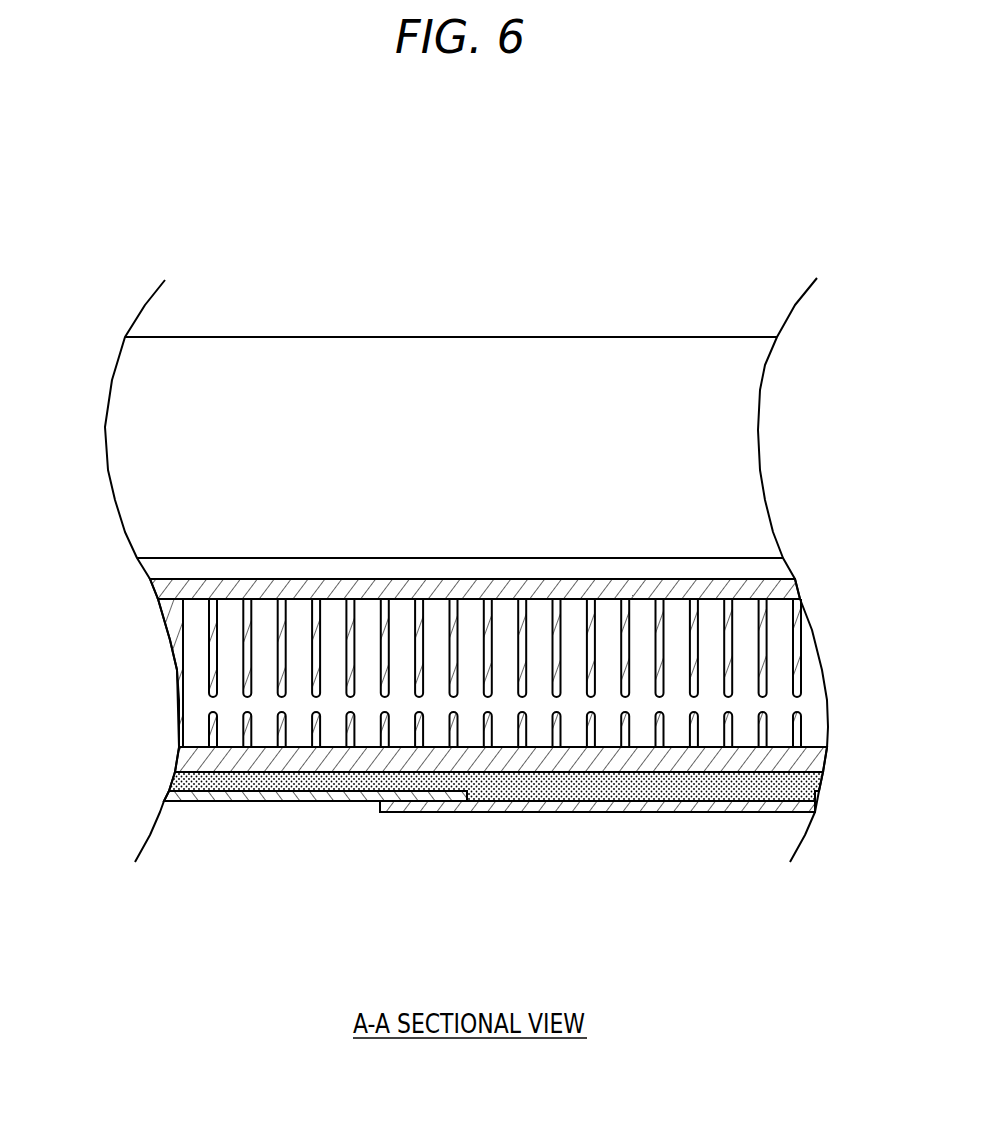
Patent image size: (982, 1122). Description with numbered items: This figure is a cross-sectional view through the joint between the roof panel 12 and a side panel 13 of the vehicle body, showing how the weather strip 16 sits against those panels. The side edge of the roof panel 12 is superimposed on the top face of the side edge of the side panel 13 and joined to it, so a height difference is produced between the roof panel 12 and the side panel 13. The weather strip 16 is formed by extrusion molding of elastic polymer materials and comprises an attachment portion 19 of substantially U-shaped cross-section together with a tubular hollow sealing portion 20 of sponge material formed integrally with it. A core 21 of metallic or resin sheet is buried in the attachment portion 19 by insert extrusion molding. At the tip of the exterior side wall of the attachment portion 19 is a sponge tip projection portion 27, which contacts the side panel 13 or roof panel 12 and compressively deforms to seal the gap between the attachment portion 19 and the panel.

The roof panel 12 is at (283, 802).
The side panel 13 is at (563, 812).
The weather strip 16 is at (481, 337).
The attachment portion 19 is at (543, 597).
The hollow sealing portion 20 is at (390, 376).
The core 21 is at (472, 597).
The tip projection portion 27 is at (501, 801).